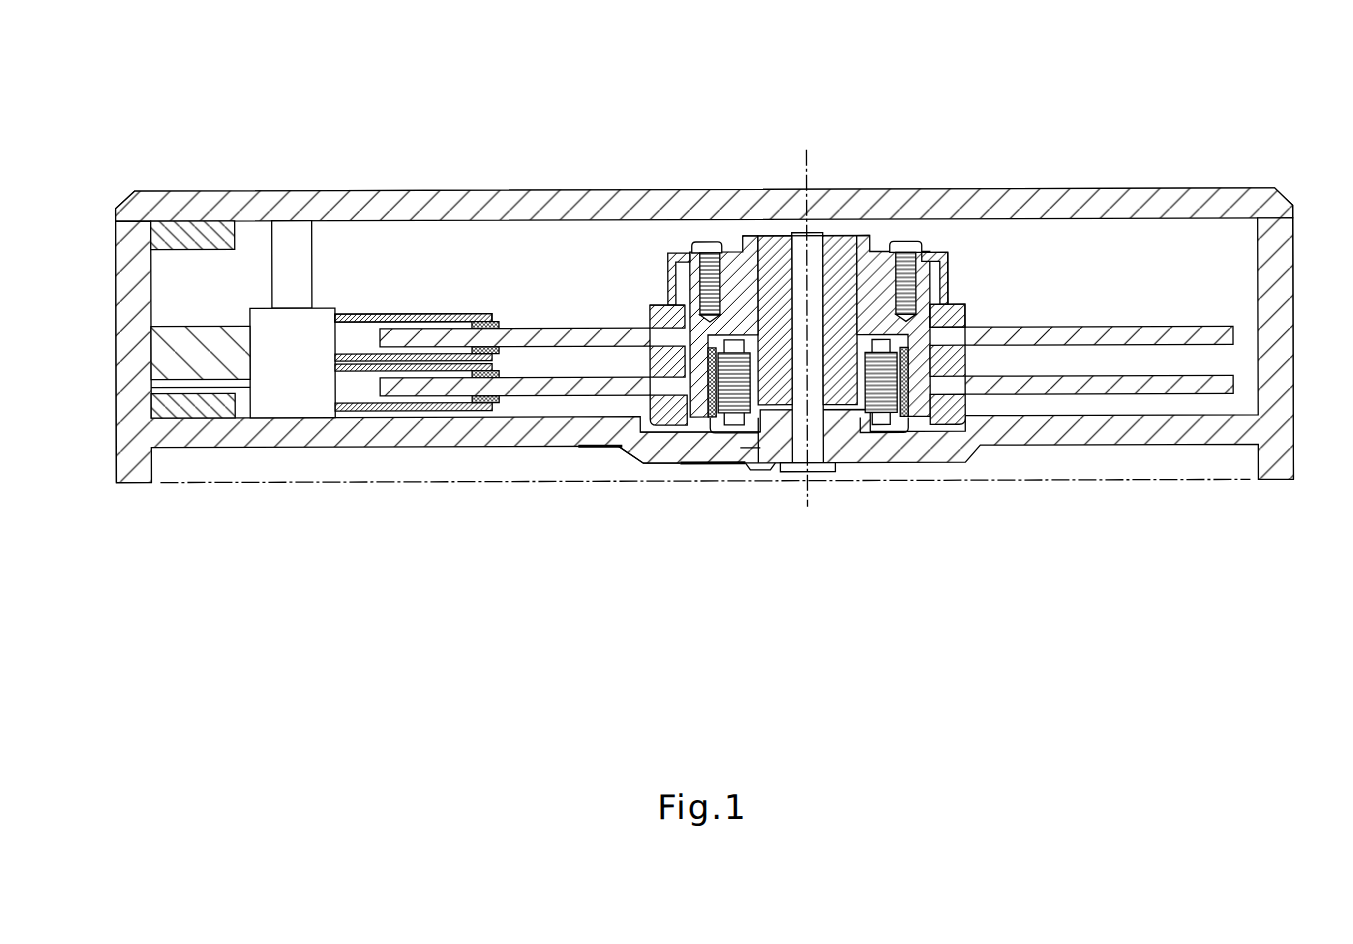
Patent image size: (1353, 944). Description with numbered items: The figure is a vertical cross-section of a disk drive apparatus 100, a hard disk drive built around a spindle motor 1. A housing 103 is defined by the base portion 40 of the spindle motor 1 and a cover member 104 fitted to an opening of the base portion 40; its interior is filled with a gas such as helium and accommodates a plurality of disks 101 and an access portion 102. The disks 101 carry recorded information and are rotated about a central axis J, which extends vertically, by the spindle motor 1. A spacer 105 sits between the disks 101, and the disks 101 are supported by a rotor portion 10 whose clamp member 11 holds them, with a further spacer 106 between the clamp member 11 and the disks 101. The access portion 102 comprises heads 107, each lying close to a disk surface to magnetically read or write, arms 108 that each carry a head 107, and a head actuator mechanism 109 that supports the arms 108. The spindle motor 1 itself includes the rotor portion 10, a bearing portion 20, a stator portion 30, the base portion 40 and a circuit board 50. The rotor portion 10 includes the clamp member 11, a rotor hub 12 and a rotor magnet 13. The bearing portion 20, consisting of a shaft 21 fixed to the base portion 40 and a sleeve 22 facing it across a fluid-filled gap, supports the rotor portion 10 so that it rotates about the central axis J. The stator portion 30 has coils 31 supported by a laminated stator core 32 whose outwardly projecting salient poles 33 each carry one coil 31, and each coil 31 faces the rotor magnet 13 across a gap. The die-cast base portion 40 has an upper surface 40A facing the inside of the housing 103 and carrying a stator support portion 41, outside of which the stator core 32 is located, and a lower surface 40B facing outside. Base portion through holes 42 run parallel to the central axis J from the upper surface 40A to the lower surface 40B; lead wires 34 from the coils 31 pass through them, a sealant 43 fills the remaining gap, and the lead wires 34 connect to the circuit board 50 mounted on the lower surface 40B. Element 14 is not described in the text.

The spindle motor 1 is at (955, 255).
The rotor portion 10 is at (865, 233).
The clamp member 11 is at (668, 264).
The rotor hub 12 is at (883, 260).
The rotor magnet 13 is at (690, 425).
The bearing housing portion 14 is at (640, 430).
The bearing portion 20 is at (820, 233).
The shaft 21 is at (793, 234).
The sleeve 22 is at (770, 238).
The stator portion 30 is at (756, 424).
The coils 31 is at (712, 348).
The stator core 32 is at (684, 262).
The salient poles 33 is at (668, 305).
The lead wires 34 is at (718, 463).
The base portion 40 is at (622, 450).
The upper surface 40A is at (640, 445).
The lower surface 40B is at (655, 460).
The stator support portion 41 is at (900, 335).
The base portion through holes 42 is at (728, 448).
The sealant 43 is at (743, 440).
The circuit board 50 is at (680, 462).
The disk drive apparatus 100 is at (474, 181).
The disks 101 is at (548, 377).
The access portion 102 is at (390, 314).
The housing 103 is at (553, 188).
The cover member 104 is at (623, 200).
The spacer 105 is at (650, 365).
The spacer 106 is at (650, 312).
The heads 107 is at (490, 321).
The arms 108 is at (420, 313).
The head actuator mechanism 109 is at (328, 307).
The central axis J is at (803, 163).